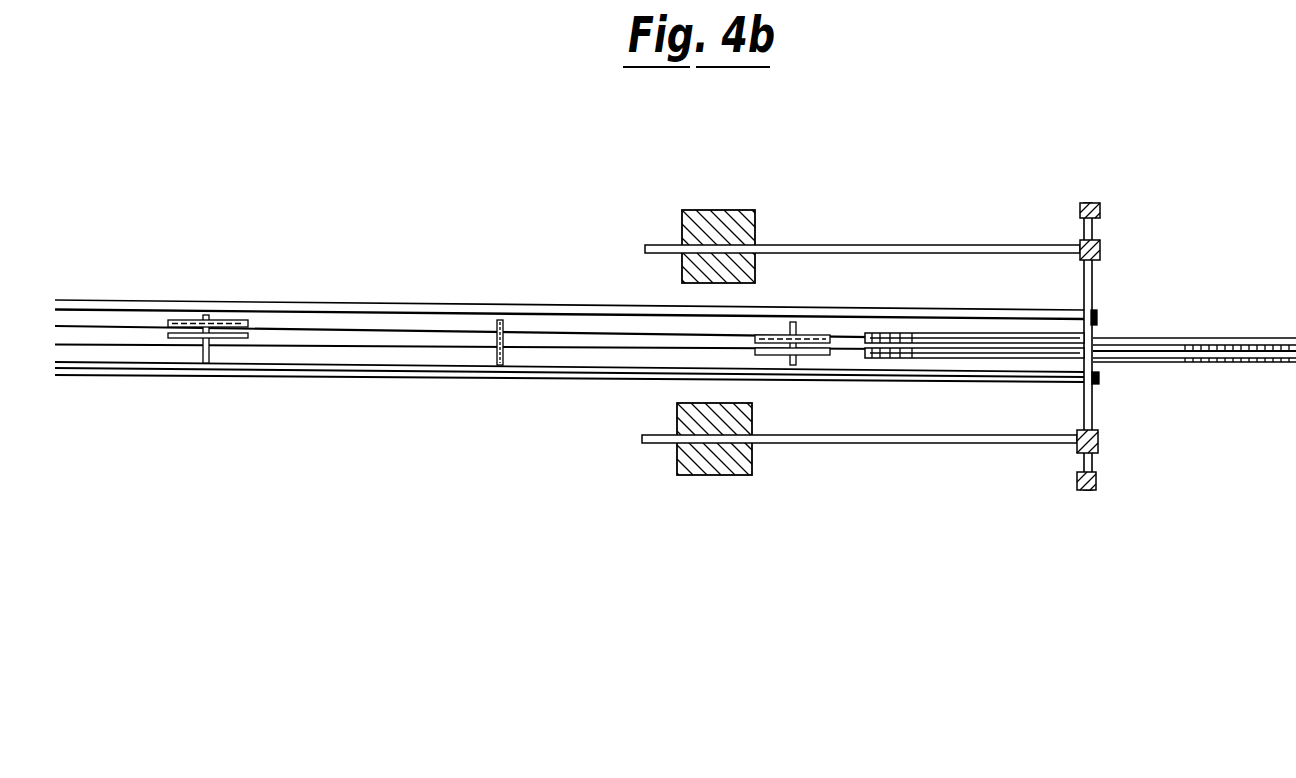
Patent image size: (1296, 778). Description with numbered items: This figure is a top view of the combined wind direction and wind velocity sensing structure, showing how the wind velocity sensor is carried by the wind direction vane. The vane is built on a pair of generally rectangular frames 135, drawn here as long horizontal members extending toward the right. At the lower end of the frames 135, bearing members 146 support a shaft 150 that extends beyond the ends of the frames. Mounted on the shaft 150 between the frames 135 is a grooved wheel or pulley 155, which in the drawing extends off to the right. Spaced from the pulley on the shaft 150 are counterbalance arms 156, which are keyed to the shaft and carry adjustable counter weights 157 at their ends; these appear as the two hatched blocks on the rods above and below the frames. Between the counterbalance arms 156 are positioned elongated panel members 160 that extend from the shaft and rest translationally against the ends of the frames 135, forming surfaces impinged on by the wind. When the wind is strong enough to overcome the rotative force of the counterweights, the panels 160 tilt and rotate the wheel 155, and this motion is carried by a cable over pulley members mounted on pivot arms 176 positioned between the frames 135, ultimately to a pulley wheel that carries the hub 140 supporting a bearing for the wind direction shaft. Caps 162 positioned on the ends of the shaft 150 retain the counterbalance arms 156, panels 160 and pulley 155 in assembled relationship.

The frames 135 is at (442, 304).
The pivot arms 176 is at (212, 352).
The adjustable counter weights 157 is at (757, 222).
The counterbalance arms 156 is at (918, 247).
The elongated panel members 160 is at (1098, 408).
The shaft 150 is at (1098, 452).
The caps 162 is at (1097, 480).
The bearing members 146 is at (1097, 316).
The hub 140 is at (1102, 378).
The grooved wheel or pulley 155 is at (1183, 337).